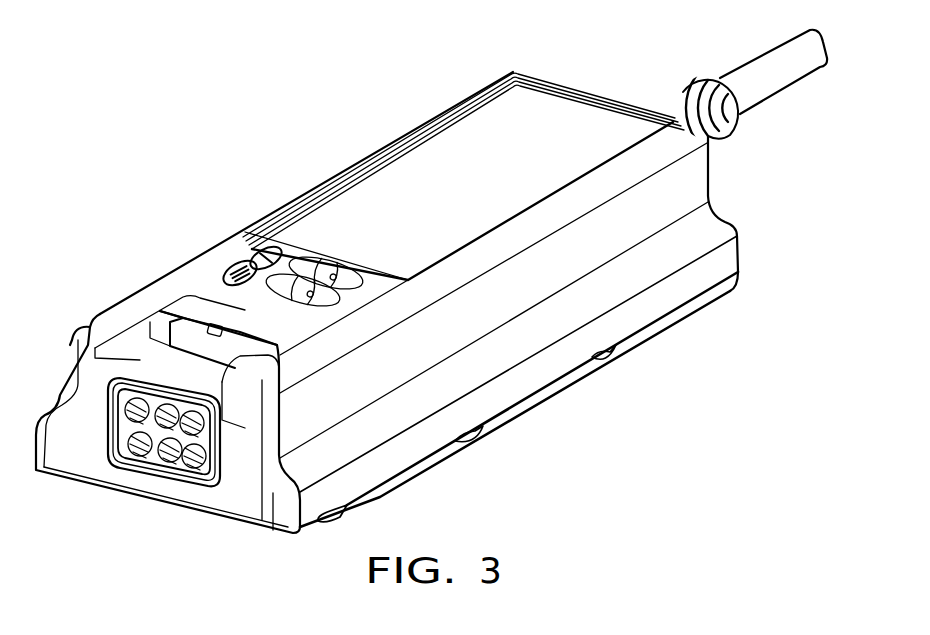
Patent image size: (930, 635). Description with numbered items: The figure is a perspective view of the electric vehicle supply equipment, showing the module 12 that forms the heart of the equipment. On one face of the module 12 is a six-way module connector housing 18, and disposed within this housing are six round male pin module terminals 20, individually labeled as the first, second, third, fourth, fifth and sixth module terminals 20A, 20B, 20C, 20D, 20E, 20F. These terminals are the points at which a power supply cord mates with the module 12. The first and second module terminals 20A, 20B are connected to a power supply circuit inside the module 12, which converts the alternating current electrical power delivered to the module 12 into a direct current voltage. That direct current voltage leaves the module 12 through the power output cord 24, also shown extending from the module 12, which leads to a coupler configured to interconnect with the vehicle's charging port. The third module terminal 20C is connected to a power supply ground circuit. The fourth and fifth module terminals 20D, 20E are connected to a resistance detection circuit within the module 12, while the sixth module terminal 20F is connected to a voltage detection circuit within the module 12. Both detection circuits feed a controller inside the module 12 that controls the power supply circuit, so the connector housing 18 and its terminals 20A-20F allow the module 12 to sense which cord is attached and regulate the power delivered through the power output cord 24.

The module 12 is at (338, 98).
The six-way module connector housing 18 is at (193, 368).
The module terminals 20 is at (164, 432).
The first module terminal 20A is at (196, 411).
The second module terminal 20B is at (197, 458).
The third module terminal 20C is at (168, 450).
The fourth module terminal 20D is at (137, 442).
The fifth module terminal 20E is at (137, 398).
The sixth module terminal 20F is at (165, 404).
The power output cord 24 is at (768, 57).